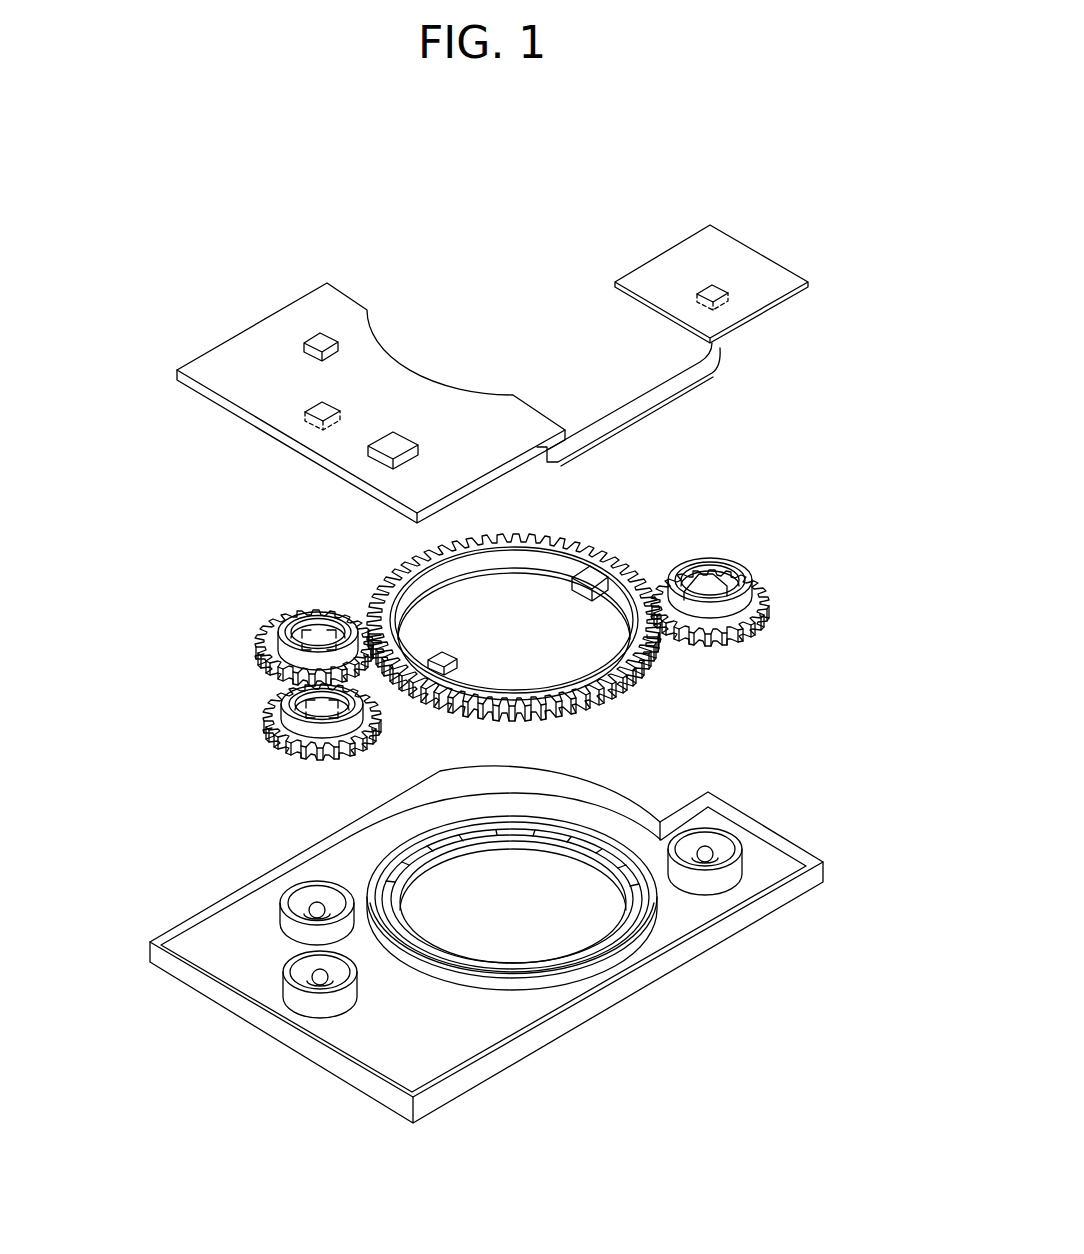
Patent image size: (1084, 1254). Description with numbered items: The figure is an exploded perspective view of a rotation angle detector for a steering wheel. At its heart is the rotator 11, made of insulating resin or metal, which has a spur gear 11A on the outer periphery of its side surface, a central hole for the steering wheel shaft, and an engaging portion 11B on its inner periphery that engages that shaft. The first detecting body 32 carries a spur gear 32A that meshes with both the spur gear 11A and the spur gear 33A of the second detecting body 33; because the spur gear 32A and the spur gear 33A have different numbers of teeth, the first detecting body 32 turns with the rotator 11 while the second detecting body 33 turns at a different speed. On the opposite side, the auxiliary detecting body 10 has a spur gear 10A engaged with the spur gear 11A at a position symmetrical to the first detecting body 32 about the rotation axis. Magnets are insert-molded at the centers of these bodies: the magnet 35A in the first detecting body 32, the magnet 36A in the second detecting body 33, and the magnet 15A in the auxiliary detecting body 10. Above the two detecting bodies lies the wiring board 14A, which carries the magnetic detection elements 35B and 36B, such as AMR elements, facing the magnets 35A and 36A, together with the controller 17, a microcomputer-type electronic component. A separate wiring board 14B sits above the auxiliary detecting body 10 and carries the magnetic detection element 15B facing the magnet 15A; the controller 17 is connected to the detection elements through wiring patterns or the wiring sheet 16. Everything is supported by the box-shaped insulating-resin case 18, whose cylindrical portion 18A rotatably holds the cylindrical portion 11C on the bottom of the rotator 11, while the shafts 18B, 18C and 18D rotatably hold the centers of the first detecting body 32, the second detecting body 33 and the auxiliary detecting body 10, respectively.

The auxiliary detecting body 10 is at (777, 567).
The spur gear 10A is at (773, 600).
The rotator 11 is at (579, 607).
The spur gear 11A is at (653, 675).
The engaging portion 11B is at (595, 580).
The cylindrical portion 11C is at (540, 565).
The wiring board 14A is at (217, 364).
The wiring board 14B is at (752, 308).
The magnet 15A is at (715, 575).
The magnetic detection element 15B is at (717, 283).
The wiring sheet 16 is at (637, 395).
The controller 17 is at (392, 440).
The case 18 is at (495, 944).
The cylindrical portion 18A is at (640, 917).
The shaft 18B is at (313, 908).
The shaft 18C is at (313, 980).
The shaft 18D is at (715, 857).
The first detecting body 32 is at (235, 598).
The spur gear 32A is at (255, 660).
The second detecting body 33 is at (239, 748).
The spur gear 33A is at (265, 733).
The magnet 35A is at (300, 612).
The magnetic detection element 35B is at (313, 338).
The magnet 36A is at (305, 708).
The magnetic detection element 36B is at (313, 414).